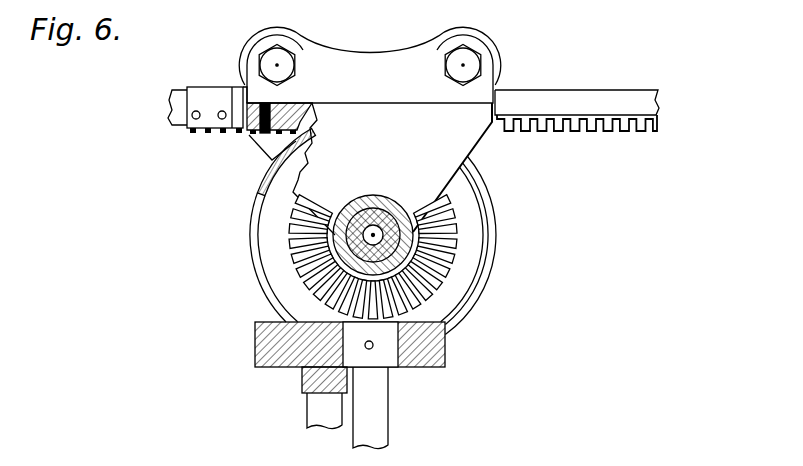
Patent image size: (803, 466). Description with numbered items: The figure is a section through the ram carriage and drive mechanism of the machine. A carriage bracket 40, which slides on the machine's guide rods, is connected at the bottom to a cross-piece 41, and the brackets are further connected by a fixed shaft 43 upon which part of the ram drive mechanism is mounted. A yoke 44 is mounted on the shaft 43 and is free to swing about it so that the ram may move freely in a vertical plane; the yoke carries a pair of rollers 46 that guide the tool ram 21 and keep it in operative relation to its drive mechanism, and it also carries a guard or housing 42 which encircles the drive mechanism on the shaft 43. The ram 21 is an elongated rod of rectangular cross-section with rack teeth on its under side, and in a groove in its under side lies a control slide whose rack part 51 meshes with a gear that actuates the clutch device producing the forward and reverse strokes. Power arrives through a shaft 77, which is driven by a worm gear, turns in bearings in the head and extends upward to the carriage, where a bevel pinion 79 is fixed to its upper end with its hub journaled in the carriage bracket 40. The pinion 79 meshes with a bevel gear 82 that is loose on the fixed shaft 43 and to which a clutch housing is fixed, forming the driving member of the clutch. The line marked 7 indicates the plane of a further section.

The section line 7- 7 is at (370, 36).
The rack bar 21 is at (576, 98).
The base block 40 is at (445, 360).
The bearing hub 41 is at (303, 382).
The ring housing 42 is at (460, 318).
The pinion hub 43 is at (383, 210).
The bracket 44 is at (457, 138).
The yoke plate 46 is at (283, 30).
The rack teeth 51 is at (590, 130).
The drive shaft 77 is at (380, 433).
The gear teeth 79 is at (412, 313).
The bevel gear 82 is at (422, 261).